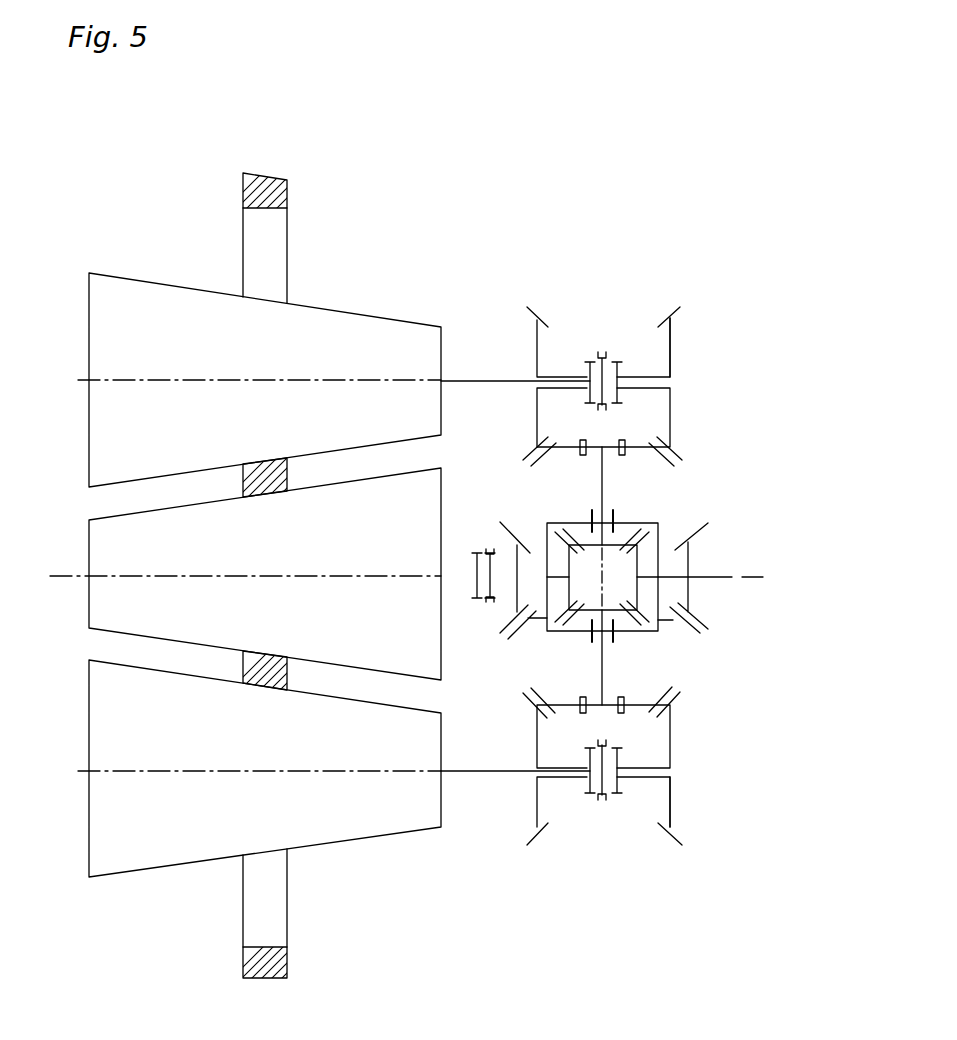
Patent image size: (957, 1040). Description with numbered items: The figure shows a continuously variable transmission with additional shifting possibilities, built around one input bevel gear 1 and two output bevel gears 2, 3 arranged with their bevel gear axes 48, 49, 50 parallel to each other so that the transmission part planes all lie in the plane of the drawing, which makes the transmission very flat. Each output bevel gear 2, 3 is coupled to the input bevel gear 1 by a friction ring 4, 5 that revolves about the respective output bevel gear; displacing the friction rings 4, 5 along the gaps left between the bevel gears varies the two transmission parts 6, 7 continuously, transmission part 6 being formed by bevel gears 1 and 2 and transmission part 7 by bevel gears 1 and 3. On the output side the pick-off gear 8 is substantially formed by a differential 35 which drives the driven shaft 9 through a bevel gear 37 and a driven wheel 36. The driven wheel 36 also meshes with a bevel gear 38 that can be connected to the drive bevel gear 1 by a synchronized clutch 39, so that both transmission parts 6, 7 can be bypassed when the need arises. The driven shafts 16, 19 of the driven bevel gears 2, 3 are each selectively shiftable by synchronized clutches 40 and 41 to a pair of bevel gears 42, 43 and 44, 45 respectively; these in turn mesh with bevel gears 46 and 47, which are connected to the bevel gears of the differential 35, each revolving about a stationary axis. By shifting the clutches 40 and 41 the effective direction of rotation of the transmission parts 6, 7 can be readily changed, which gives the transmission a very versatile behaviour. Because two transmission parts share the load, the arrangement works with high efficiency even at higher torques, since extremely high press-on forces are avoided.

The input bevel gear 1 is at (95, 617).
The output bevel gear 2 is at (95, 863).
The output bevel gear 3 is at (95, 297).
The friction ring 4 is at (247, 963).
The friction ring 5 is at (243, 188).
The transmission part 6 is at (89, 697).
The transmission part 7 is at (89, 483).
The pick-off gear 8 is at (594, 178).
The driven shaft 9 is at (723, 577).
The driven shaft 16 is at (475, 381).
The driven shaft 19 is at (475, 771).
The differential 35 is at (640, 520).
The driven wheel 36 is at (665, 620).
The bevel gear 37 is at (690, 597).
The bevel gear 38 is at (517, 560).
The synchronized clutch 39 is at (490, 600).
The synchronized clutch 40 is at (602, 355).
The synchronized clutch 41 is at (602, 797).
The bevel gear 42 is at (540, 350).
The bevel gear 43 is at (670, 352).
The bevel gear 44 is at (537, 807).
The bevel gear 45 is at (669, 807).
The bevel gear 46 is at (640, 447).
The bevel gear 47 is at (642, 705).
The bevel gear axis 48 is at (80, 380).
The bevel gear axis 49 is at (70, 574).
The bevel gear axis 50 is at (82, 770).